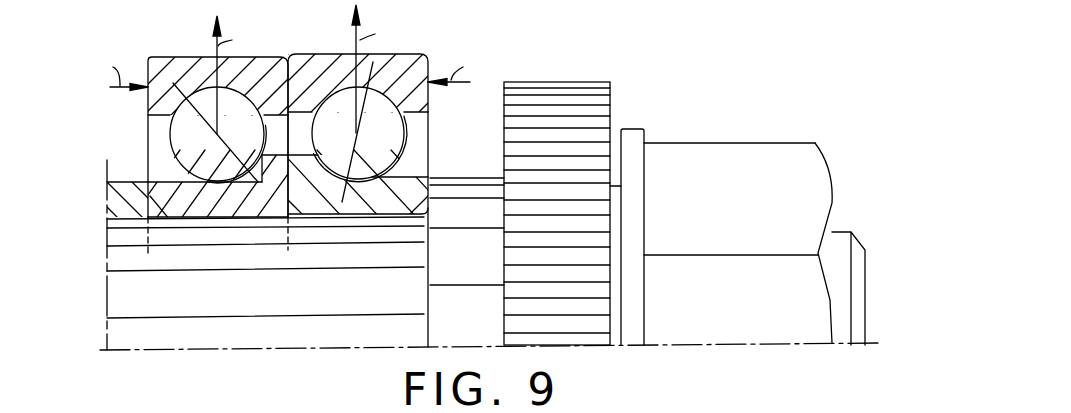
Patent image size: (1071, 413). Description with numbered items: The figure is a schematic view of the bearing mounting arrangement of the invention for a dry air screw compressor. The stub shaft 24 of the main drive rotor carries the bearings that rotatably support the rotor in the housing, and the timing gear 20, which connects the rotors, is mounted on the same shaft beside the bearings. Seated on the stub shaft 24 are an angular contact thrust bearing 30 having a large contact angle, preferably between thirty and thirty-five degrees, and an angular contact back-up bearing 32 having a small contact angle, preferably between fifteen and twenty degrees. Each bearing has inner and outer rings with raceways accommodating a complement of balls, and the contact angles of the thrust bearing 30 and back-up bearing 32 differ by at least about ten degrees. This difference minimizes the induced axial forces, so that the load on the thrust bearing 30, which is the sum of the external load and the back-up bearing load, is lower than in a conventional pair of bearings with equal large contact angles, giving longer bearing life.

The timing gear 20 is at (597, 82).
The stub shaft 24 is at (340, 328).
The angular contact thrust bearing 30 is at (163, 57).
The angular contact back-up bearing 32 is at (309, 54).